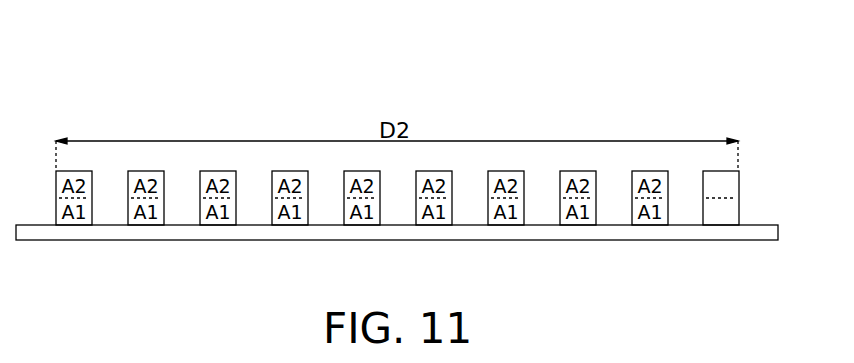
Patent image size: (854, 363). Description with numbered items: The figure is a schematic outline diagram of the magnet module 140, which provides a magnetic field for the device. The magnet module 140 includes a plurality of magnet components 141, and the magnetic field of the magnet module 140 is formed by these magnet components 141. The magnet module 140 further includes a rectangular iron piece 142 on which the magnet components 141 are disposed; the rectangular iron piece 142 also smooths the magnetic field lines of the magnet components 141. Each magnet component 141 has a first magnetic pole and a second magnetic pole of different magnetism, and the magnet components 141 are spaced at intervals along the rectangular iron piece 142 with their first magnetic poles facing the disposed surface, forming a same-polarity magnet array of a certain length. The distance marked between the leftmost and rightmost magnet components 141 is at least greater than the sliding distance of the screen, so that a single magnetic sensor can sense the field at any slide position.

The magnet module 140 is at (55, 87).
The magnet component 141 is at (703, 204).
The rectangular iron piece 142 is at (612, 230).